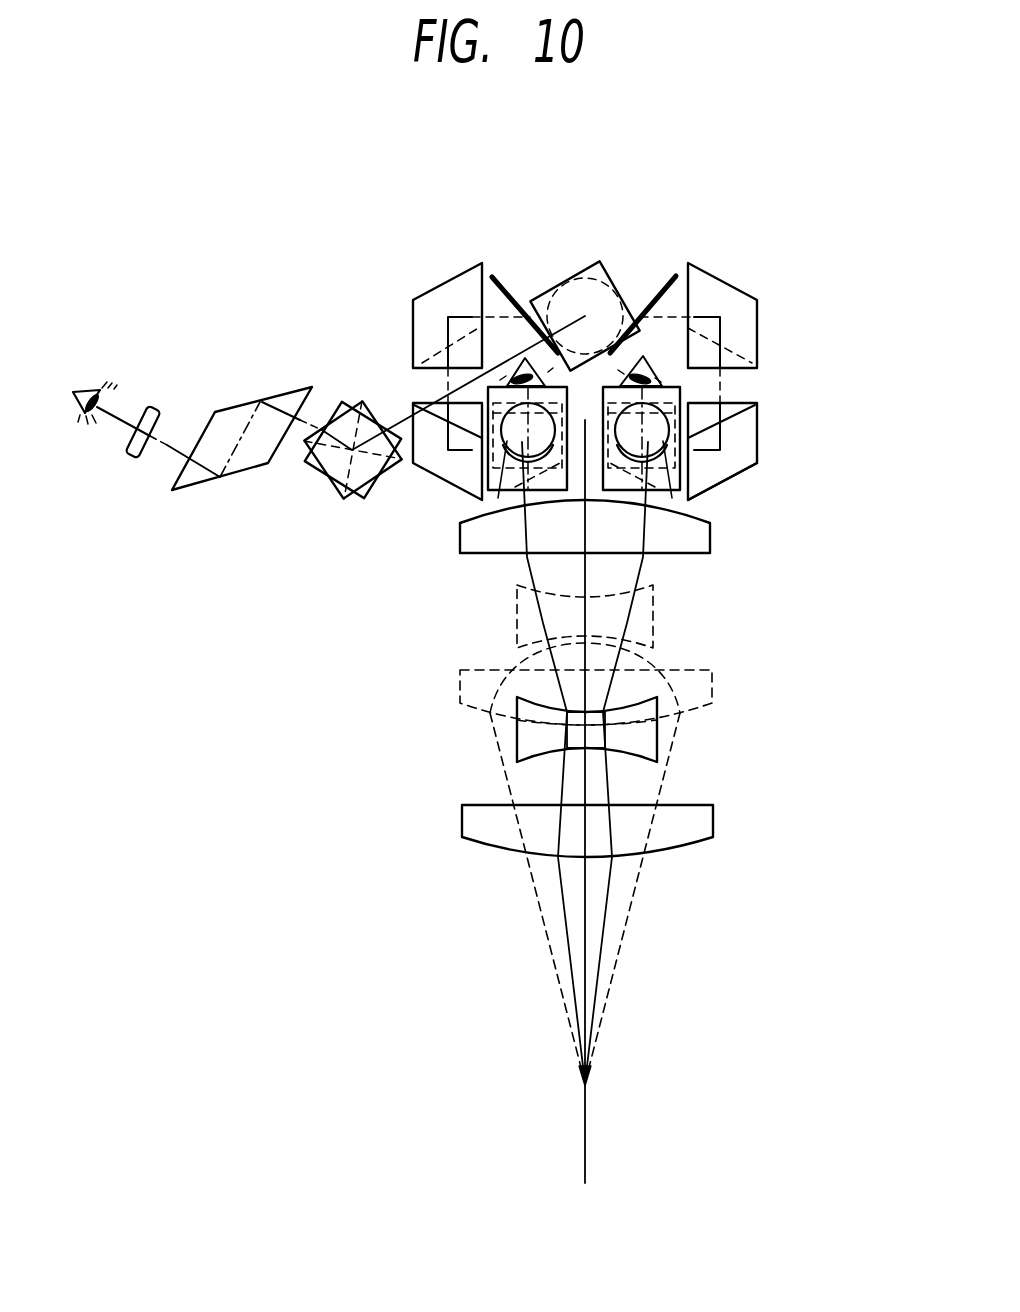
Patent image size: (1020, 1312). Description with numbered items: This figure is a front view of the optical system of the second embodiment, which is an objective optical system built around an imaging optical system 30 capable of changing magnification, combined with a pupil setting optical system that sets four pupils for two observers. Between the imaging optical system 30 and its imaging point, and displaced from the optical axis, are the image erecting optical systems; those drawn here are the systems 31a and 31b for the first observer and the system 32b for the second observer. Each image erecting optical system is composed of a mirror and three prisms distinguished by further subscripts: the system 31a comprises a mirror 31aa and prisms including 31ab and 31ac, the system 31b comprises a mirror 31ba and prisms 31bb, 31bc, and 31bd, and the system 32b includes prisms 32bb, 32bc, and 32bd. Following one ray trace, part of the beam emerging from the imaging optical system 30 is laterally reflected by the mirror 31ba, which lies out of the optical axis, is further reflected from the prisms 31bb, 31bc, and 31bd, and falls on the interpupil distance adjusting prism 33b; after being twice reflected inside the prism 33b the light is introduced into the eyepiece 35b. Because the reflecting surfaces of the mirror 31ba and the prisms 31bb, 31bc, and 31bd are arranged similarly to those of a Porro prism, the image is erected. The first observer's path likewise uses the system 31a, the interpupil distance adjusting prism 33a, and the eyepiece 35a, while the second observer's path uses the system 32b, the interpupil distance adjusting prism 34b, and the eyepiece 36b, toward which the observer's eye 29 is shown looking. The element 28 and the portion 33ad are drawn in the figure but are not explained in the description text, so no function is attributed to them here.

The eye of observer 29 is at (93, 390).
The eyepiece 36b is at (153, 407).
The interpupil distance adjusting prism 34b is at (218, 416).
The image erecting optical system 32b is at (309, 452).
The prism of image erecting optical system 32bd is at (341, 402).
The prism of image erecting optical system 32bc is at (340, 500).
The image erecting optical system 31a is at (432, 368).
The prism of image erecting optical system 31ab is at (437, 283).
The prism of image erecting optical system 31ac is at (420, 465).
The mirror of image erecting optical system 31aa is at (502, 272).
The prism of image erecting optical system 32bb is at (592, 260).
The image erecting optical system 31b is at (746, 359).
The prism of image erecting optical system 31bb is at (725, 280).
The prism of image erecting optical system 31bc is at (750, 448).
The prism of image erecting optical system 31bd is at (690, 499).
The mirror 31ba is at (663, 273).
The light source prism 28 is at (520, 372).
The interpupil distance adjusting prism 33a is at (464, 528).
The lens holder aperture 33ad is at (497, 498).
The eyepiece 35a is at (497, 505).
The interpupil distance adjusting prism 33b is at (710, 459).
The eyepiece 35b is at (655, 418).
The imaging optical system 30 is at (722, 840).